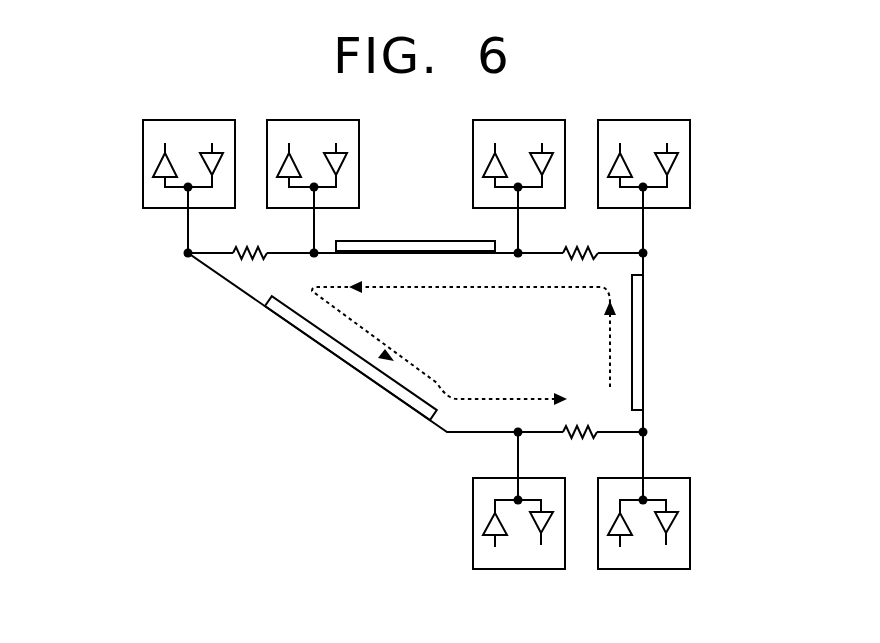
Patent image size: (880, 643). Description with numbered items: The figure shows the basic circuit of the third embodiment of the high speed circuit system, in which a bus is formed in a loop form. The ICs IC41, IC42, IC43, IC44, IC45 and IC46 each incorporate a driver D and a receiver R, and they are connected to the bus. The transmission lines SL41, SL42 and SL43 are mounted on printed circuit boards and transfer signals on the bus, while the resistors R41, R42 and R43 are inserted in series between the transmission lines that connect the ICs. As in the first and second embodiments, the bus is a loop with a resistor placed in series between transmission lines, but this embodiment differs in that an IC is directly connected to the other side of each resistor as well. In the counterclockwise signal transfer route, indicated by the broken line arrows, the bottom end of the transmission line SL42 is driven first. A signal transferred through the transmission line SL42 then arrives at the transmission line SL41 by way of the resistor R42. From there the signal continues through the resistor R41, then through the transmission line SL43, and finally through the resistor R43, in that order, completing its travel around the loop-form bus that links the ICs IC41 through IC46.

The IC IC41 is at (142, 174).
The IC IC42 is at (360, 142).
The IC IC43 is at (472, 175).
The IC IC44 is at (690, 141).
The IC IC45 is at (691, 500).
The IC IC46 is at (472, 534).
The resistor R41 is at (250, 239).
The resistor R42 is at (580, 239).
The resistor R43 is at (580, 445).
The transmission line SL41 is at (415, 233).
The transmission line SL42 is at (646, 355).
The transmission line SL43 is at (335, 355).